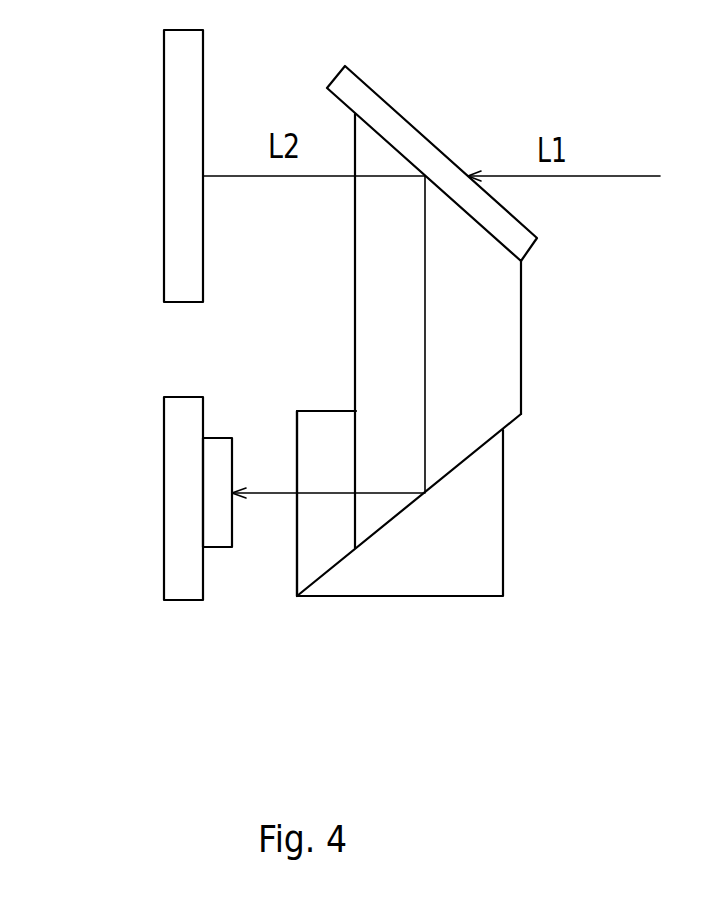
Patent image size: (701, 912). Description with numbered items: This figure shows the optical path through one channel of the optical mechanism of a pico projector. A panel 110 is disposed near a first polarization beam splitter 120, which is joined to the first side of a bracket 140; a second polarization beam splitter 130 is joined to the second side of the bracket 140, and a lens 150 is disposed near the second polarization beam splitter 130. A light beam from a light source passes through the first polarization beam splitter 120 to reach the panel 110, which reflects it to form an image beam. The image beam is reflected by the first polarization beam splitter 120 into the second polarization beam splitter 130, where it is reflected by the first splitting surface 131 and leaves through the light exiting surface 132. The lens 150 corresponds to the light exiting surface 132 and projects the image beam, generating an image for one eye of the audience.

The panel 110 is at (176, 115).
The first polarization beam splitter 120 is at (365, 102).
The second polarization beam splitter 130 is at (407, 550).
The first splitting surface 131 is at (457, 467).
The light exiting surface 132 is at (295, 548).
The bracket 140 is at (482, 384).
The lens 150 is at (187, 535).